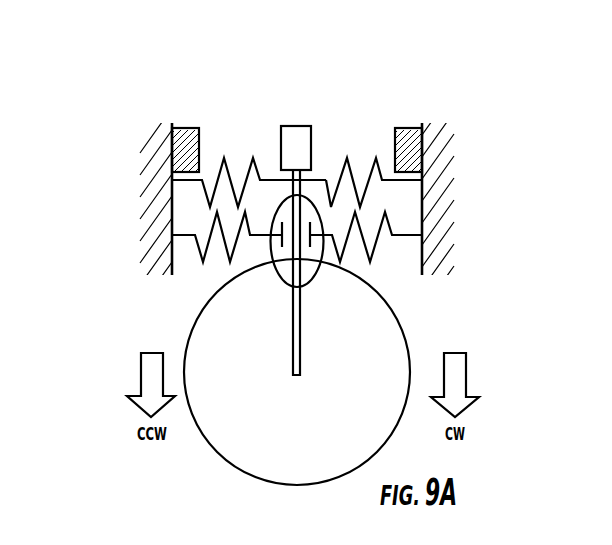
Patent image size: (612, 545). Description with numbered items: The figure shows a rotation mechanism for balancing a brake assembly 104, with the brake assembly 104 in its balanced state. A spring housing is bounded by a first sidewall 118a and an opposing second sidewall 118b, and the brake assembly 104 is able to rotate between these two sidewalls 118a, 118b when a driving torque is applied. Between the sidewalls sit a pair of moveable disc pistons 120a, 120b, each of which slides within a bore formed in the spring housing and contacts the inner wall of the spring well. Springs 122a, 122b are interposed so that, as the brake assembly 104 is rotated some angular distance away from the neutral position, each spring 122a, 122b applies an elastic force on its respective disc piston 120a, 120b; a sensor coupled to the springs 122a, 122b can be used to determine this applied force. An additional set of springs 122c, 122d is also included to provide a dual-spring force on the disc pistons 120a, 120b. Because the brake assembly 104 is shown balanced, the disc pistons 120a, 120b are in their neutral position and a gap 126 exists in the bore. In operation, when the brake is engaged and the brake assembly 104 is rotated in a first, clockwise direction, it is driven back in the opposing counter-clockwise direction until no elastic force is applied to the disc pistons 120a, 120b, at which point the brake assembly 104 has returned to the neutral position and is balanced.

The brake assembly 104 is at (250, 474).
The first sidewall 118a is at (185, 147).
The second sidewall 118b is at (409, 145).
The disc piston 120a is at (272, 220).
The disc piston 120b is at (324, 220).
The spring 122a is at (197, 243).
The spring 122b is at (378, 245).
The additional spring 122c is at (195, 183).
The additional spring 122d is at (382, 185).
The gap 126 is at (322, 272).